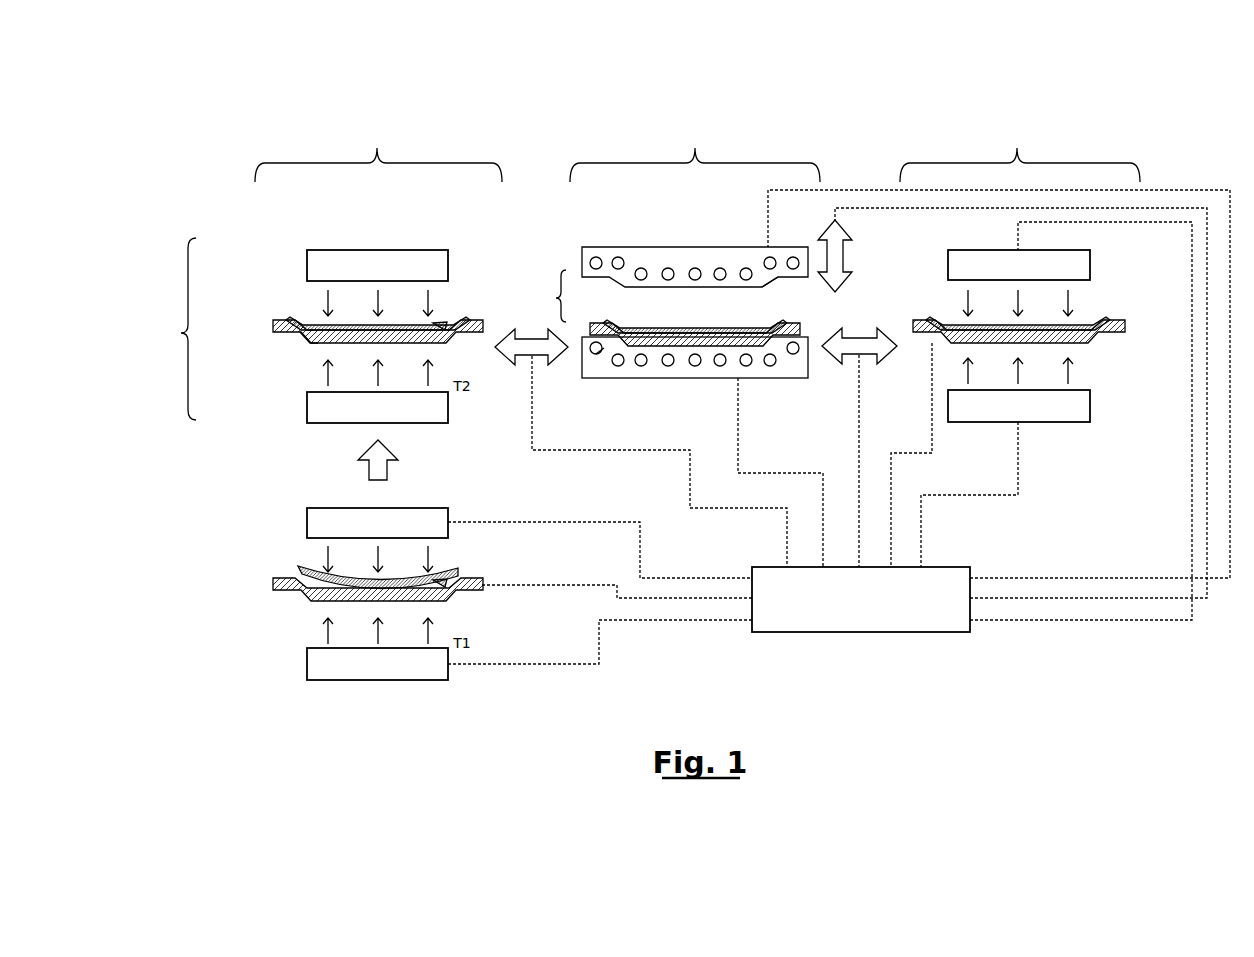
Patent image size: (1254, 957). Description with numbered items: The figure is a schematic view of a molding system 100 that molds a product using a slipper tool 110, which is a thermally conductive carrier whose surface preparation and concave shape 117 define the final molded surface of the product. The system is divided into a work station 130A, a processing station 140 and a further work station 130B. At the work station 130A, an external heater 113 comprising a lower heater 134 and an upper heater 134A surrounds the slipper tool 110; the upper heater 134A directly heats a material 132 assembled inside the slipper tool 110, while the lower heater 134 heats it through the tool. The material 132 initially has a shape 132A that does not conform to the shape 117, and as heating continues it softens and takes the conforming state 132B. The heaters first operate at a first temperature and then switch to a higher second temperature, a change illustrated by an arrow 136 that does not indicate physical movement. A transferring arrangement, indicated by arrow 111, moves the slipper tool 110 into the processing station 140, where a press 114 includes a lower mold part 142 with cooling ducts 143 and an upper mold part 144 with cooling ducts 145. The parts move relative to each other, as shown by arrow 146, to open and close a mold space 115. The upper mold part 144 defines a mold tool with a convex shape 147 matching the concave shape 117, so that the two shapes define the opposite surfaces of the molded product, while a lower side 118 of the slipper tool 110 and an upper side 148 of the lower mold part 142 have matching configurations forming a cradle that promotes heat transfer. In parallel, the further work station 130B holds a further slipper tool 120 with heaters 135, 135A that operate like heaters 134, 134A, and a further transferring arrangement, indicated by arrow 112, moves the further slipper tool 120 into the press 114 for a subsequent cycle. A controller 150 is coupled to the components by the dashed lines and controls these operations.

The molding system 100 is at (1054, 70).
The work station 130A is at (378, 147).
The processing station 140 is at (695, 147).
The further work station 130B is at (1020, 147).
The external heater 113 is at (175, 329).
The upper heater 134A is at (307, 270).
The lower heater 134 is at (307, 410).
The slipper tool 110 is at (476, 322).
The material 132 is at (692, 328).
The initial shape of material 132A is at (300, 568).
The conformed state of material 132B is at (305, 322).
The concave shape of slipper tool 117 is at (433, 323).
The lower side of slipper tool 118 is at (285, 334).
The transferring arrangement 111 is at (512, 352).
The further transferring arrangement 112 is at (878, 348).
The heating stage change arrow 136 is at (388, 467).
The press 114 is at (546, 296).
The upper mold part 144 is at (610, 283).
The ducts 145 is at (770, 258).
The convex shape of mold tool 147 is at (775, 280).
The mold opening/closing arrow 146 is at (840, 248).
The lower mold part 142 is at (592, 340).
The ducts 143 is at (770, 366).
The upper side of lower mold part 148 is at (600, 356).
The mold space 115 is at (738, 308).
The further slipper tool 120 is at (806, 327).
The upper heater of further work station 135A is at (1090, 270).
The lower heater of further work station 135 is at (1080, 408).
The controller 150 is at (893, 622).